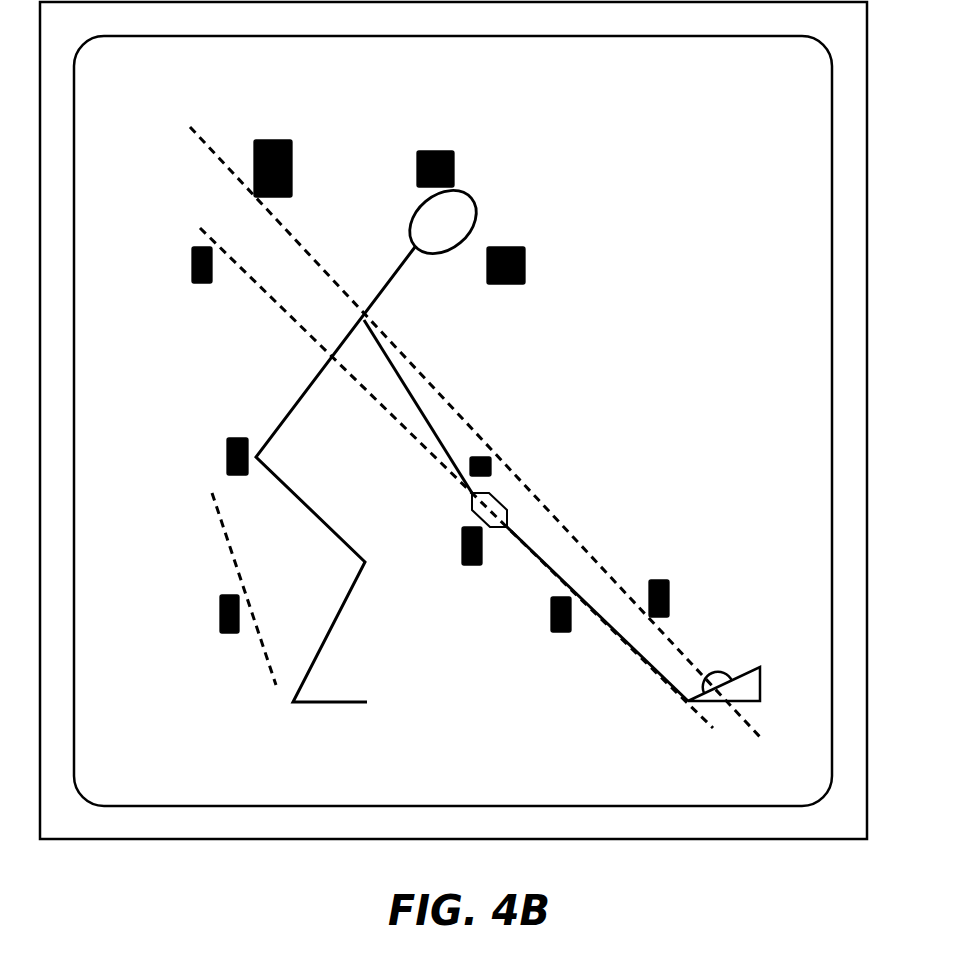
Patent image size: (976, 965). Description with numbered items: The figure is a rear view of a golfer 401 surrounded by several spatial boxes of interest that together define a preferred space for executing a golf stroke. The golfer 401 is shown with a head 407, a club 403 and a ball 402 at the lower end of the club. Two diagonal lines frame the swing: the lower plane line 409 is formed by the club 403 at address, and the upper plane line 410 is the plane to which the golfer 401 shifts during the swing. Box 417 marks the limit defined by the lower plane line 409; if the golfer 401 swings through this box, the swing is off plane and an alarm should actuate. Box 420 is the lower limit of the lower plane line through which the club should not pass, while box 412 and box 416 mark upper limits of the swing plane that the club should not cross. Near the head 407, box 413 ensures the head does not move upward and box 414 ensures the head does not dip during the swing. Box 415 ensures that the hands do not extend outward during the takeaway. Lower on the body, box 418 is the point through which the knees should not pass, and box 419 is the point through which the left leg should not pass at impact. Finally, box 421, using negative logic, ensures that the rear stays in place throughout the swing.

The golfer 401 is at (310, 390).
The ball 402 is at (728, 676).
The club 403 is at (632, 650).
The head 407 is at (476, 212).
The lower plane line 409 is at (302, 327).
The upper plane line 410 is at (540, 507).
The box 412 is at (292, 157).
The box 413 is at (454, 170).
The box 414 is at (525, 264).
The box 415 is at (491, 470).
The box 416 is at (669, 592).
The box 417 is at (551, 612).
The box 418 is at (462, 555).
The box 419 is at (232, 633).
The box 420 is at (200, 283).
The box 421 is at (227, 460).